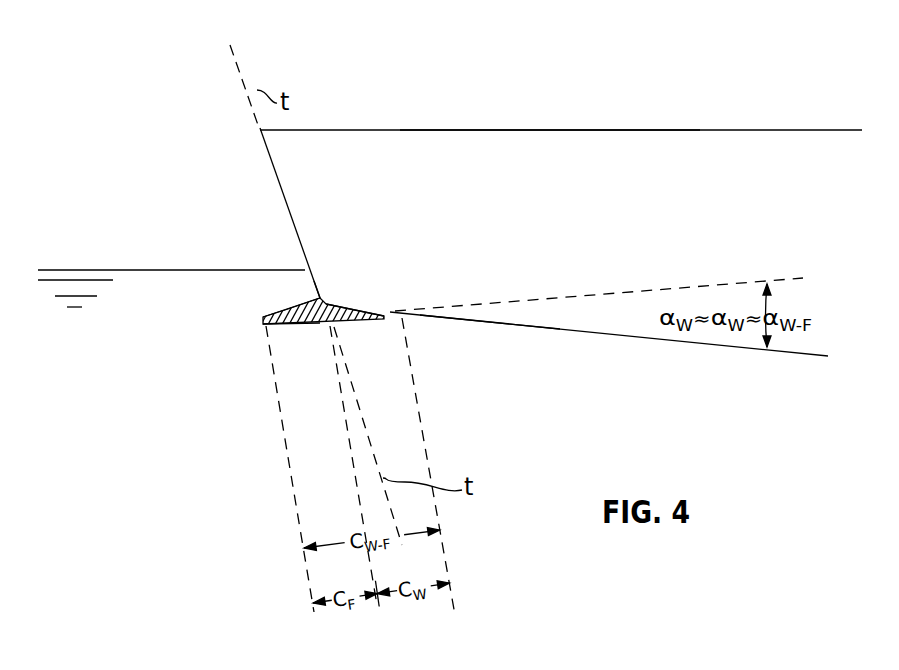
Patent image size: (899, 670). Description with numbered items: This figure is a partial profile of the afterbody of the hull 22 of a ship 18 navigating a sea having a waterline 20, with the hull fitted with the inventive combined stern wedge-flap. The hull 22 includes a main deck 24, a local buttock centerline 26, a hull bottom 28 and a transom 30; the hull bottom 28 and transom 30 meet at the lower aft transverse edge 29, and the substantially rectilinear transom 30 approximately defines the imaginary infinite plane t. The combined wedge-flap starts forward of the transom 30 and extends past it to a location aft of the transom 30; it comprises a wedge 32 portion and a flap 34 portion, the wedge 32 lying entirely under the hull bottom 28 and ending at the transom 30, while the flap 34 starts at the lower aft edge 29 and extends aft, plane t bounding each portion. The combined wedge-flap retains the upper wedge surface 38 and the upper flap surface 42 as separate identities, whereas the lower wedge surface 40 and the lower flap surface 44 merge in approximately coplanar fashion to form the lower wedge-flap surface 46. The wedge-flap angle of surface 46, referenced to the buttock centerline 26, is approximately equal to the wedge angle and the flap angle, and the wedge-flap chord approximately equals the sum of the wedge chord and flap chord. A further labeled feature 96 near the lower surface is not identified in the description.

The ship 18 is at (222, 109).
The waterline 20 is at (112, 262).
The hull 22 is at (682, 105).
The main deck 24 is at (512, 118).
The buttock centerline 26 is at (478, 323).
The hull bottom 28 is at (540, 330).
The lower aft transverse edge 29 is at (327, 300).
The transom 30 is at (267, 180).
The stern wedge 32 is at (338, 302).
The stern flap 34 is at (275, 312).
The upper wedge surface 38 is at (350, 307).
The lower wedge surface 40 is at (364, 322).
The upper flap surface 42 is at (293, 300).
The lower flap surface 44 is at (287, 323).
The lower wedge-flap surface 46 is at (318, 325).
The foil lower surface forward portion 96 is at (315, 323).